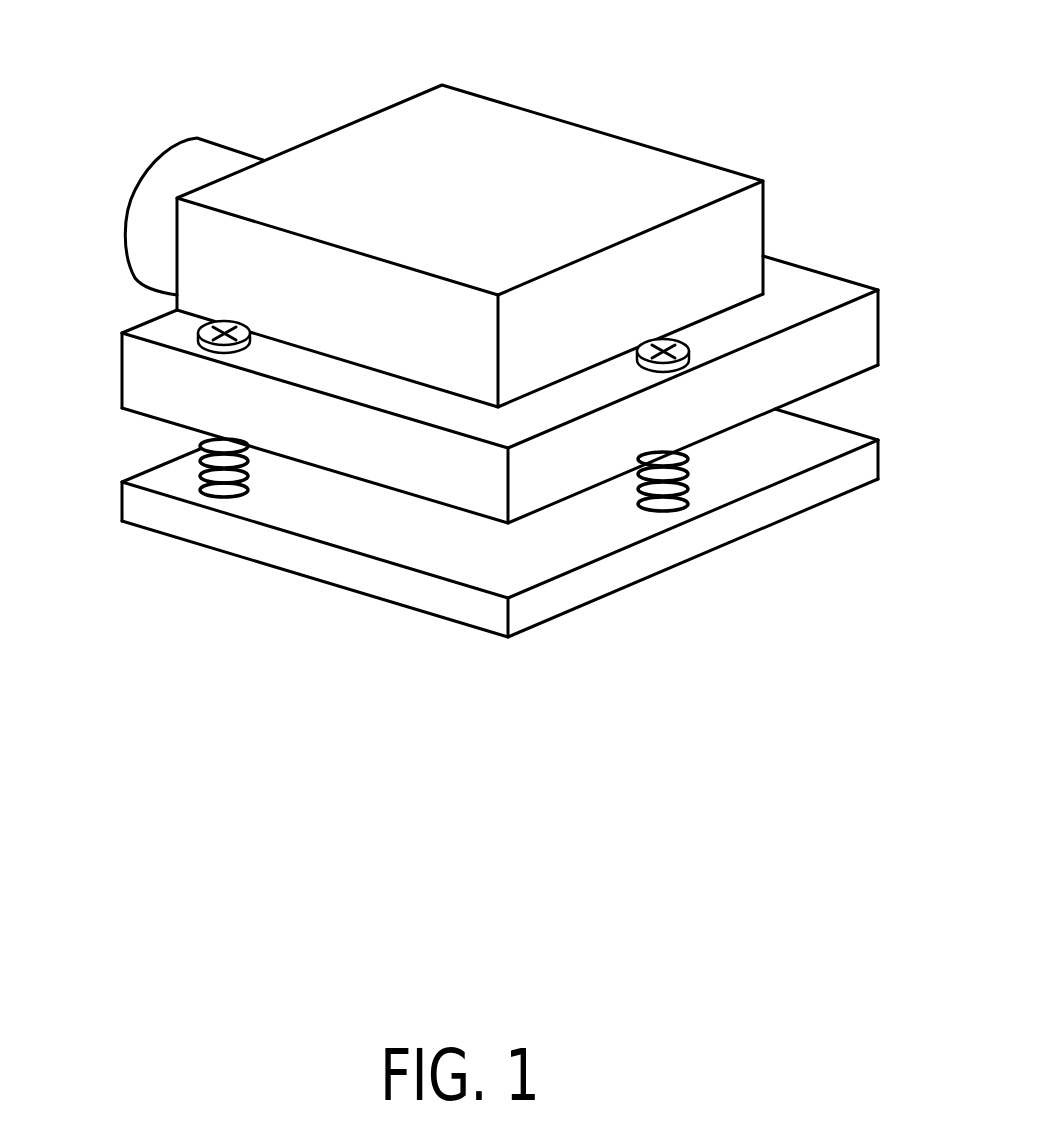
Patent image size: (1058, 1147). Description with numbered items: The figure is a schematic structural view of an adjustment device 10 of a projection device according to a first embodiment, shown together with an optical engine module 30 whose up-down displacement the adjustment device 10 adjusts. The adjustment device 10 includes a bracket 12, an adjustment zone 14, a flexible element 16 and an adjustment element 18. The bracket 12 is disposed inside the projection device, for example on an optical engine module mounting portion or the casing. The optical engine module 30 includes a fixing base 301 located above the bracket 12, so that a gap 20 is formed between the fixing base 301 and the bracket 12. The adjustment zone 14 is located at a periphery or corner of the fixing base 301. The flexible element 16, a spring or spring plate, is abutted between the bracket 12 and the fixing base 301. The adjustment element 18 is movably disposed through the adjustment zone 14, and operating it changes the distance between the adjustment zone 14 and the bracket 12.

The adjustment device 10 is at (500, 539).
The bracket 12 is at (347, 573).
The adjustment zone 14 is at (258, 350).
The flexible element 16 is at (203, 497).
The adjustment element 18 is at (222, 343).
The gap 20 is at (500, 441).
The optical engine module 30 is at (572, 150).
The fixing base 301 is at (808, 288).